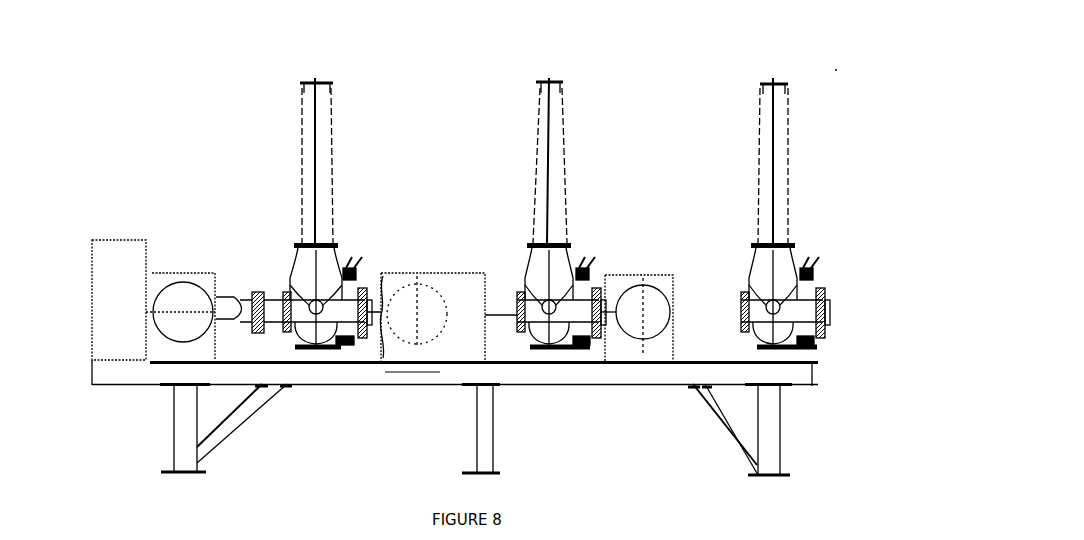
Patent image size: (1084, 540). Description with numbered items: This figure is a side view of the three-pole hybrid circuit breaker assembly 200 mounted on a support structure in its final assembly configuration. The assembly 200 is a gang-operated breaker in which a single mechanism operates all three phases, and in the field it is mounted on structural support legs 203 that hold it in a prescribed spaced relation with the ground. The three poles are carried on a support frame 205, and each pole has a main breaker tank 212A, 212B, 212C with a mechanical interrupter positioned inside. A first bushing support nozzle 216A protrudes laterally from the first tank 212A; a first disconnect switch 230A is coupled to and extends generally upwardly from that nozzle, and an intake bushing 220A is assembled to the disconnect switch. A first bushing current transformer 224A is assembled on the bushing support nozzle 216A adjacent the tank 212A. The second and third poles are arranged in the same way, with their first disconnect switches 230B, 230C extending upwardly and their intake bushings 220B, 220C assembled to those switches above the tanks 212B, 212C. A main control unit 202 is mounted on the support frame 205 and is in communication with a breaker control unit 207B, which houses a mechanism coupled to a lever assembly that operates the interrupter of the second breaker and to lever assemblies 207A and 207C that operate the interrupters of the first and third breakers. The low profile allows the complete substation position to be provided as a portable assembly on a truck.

The 3-pole hybrid circuit breaker assembly 200 is at (503, 73).
The main control unit 202 is at (93, 303).
The structural support legs 203 is at (781, 437).
The support frame 205 is at (815, 376).
The lever assembly 207A is at (155, 350).
The breaker control unit 207B is at (392, 372).
The lever assembly 207C is at (658, 362).
The main breaker tank 212A is at (173, 288).
The main breaker tank 212B is at (420, 285).
The main breaker tank 212C is at (650, 288).
The first bushing support nozzle 216A is at (236, 300).
The intake bushing 220A is at (325, 117).
The intake bushing 220B is at (563, 135).
The intake bushing 220C is at (788, 137).
The first bushing current transformer 224A is at (257, 292).
The first disconnect switch 230A is at (340, 257).
The first disconnect switch 230B is at (575, 258).
The first disconnect switch 230C is at (797, 258).